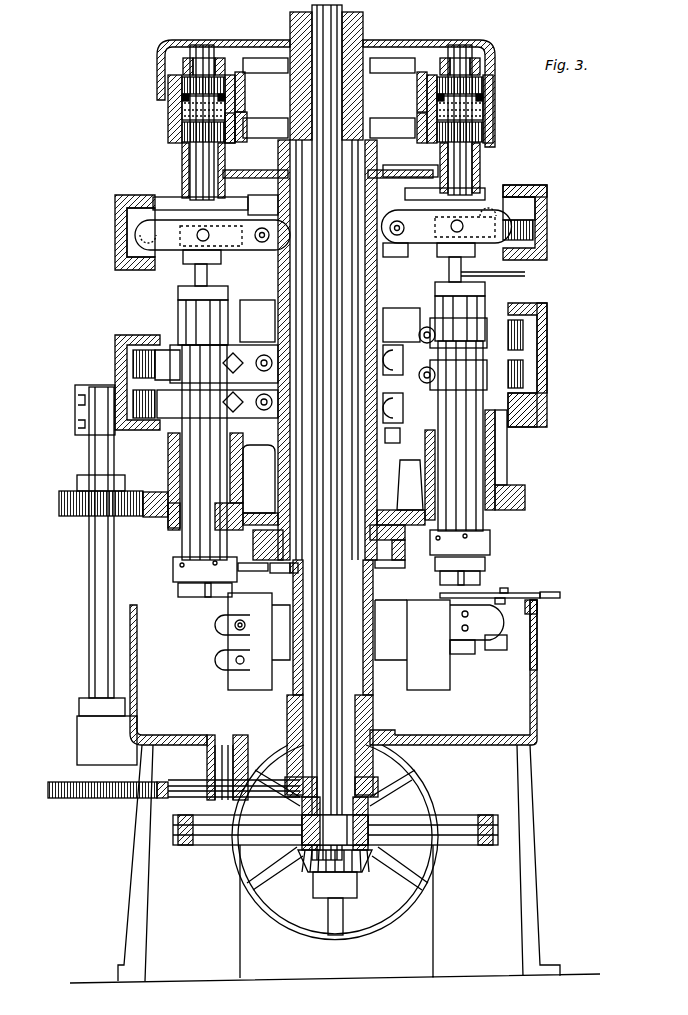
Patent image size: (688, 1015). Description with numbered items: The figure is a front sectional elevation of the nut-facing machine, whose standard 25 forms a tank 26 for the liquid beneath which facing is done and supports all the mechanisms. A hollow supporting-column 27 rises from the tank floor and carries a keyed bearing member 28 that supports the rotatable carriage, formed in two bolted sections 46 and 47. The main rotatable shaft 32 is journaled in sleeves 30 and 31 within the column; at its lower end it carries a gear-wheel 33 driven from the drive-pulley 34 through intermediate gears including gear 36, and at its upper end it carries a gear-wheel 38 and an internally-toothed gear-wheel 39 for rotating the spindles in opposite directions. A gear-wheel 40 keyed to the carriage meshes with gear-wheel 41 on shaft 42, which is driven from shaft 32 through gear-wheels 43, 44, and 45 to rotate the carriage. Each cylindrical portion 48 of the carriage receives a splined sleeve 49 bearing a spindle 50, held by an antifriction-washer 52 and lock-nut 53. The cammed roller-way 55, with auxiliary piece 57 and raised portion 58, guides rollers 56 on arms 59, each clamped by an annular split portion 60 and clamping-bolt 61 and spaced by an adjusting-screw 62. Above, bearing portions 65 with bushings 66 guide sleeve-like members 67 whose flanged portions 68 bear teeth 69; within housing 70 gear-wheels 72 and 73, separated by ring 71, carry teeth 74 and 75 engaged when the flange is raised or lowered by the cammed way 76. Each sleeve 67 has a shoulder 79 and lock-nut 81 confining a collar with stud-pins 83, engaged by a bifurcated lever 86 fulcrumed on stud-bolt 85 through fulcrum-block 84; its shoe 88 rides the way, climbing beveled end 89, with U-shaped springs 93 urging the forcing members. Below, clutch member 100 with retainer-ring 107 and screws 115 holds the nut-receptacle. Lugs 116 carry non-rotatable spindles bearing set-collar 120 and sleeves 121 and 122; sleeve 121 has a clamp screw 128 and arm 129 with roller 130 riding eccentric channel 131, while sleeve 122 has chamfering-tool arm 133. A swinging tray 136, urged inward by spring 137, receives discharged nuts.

The standard 25 is at (537, 693).
The tank 26 is at (534, 640).
The hollow supporting-column 27 is at (296, 700).
The bearing member 28 is at (253, 545).
The sleeve 30 is at (360, 125).
The sleeve 31 is at (372, 708).
The main rotatable shaft 32 is at (327, 432).
The gear-wheel 33 is at (186, 845).
The drive-pulley 34 is at (362, 935).
The intermediate gear 36 is at (315, 872).
The gear-wheel 38 is at (280, 125).
The internally-toothed gear-wheel 39 is at (160, 88).
The gear-wheel 40 is at (160, 517).
The gear-wheel 41 is at (60, 495).
The shaft 42 is at (89, 572).
The gear-wheel 43 is at (378, 786).
The gear-wheel 44 is at (176, 792).
The gear-wheel 45 is at (68, 800).
The carriage section 46 is at (243, 140).
The carriage section 47 is at (401, 492).
The cylindrically-formed portion 48 is at (168, 470).
The sleeve 49 is at (332, 302).
The spindle 50 is at (207, 280).
The antifriction-washer 52 is at (178, 312).
The lock-nut 53 is at (331, 290).
The cammed roller-way 55 is at (540, 380).
The roller 56 is at (115, 342).
The auxiliary piece 57 is at (540, 412).
The offset or raised portion 58 is at (547, 320).
The arm 59 is at (550, 352).
The annular split portion 60 is at (322, 368).
The clamping-bolt 61 is at (302, 375).
The adjusting-screw 62 is at (175, 385).
The bearing and guiding portion 65 is at (182, 168).
The antifriction metallic bushing 66 is at (222, 155).
The sleeve-like member 67 is at (319, 198).
The annular flanged portion 68 is at (232, 125).
The teeth 69 is at (182, 110).
The cylindrically-formed housing 70 is at (240, 72).
The separating-ring 71 is at (182, 100).
The gear-wheel 72 is at (195, 68).
The gear-wheel 73 is at (172, 138).
The teeth 74 is at (185, 88).
The teeth 75 is at (182, 130).
The cammed way 76 is at (535, 192).
The shoulder 79 is at (178, 220).
The lock-nut 81 is at (329, 253).
The stud-pin 83 is at (200, 243).
The fulcrum-block 84 is at (400, 163).
The stud-bolt 85 is at (255, 235).
The bifurcated lever 86 is at (323, 230).
The shoe 88 is at (548, 205).
The beveled end 89 is at (535, 230).
The U-shaped spring 93 is at (525, 274).
The clutch member 100 is at (200, 597).
The retainer-ring 107 is at (173, 570).
The screw 115 is at (178, 590).
The lug 116 is at (260, 485).
The set-collar 120 is at (238, 690).
The sleeve 121 is at (349, 621).
The sleeve 122 is at (235, 670).
The screw 128 is at (498, 650).
The projecting arm 129 is at (328, 504).
The roller 130 is at (283, 574).
The channel or groove 131 is at (263, 574).
The tool-carrying arm 133 is at (385, 660).
The swinging tray 136 is at (505, 593).
The spring 137 is at (556, 598).